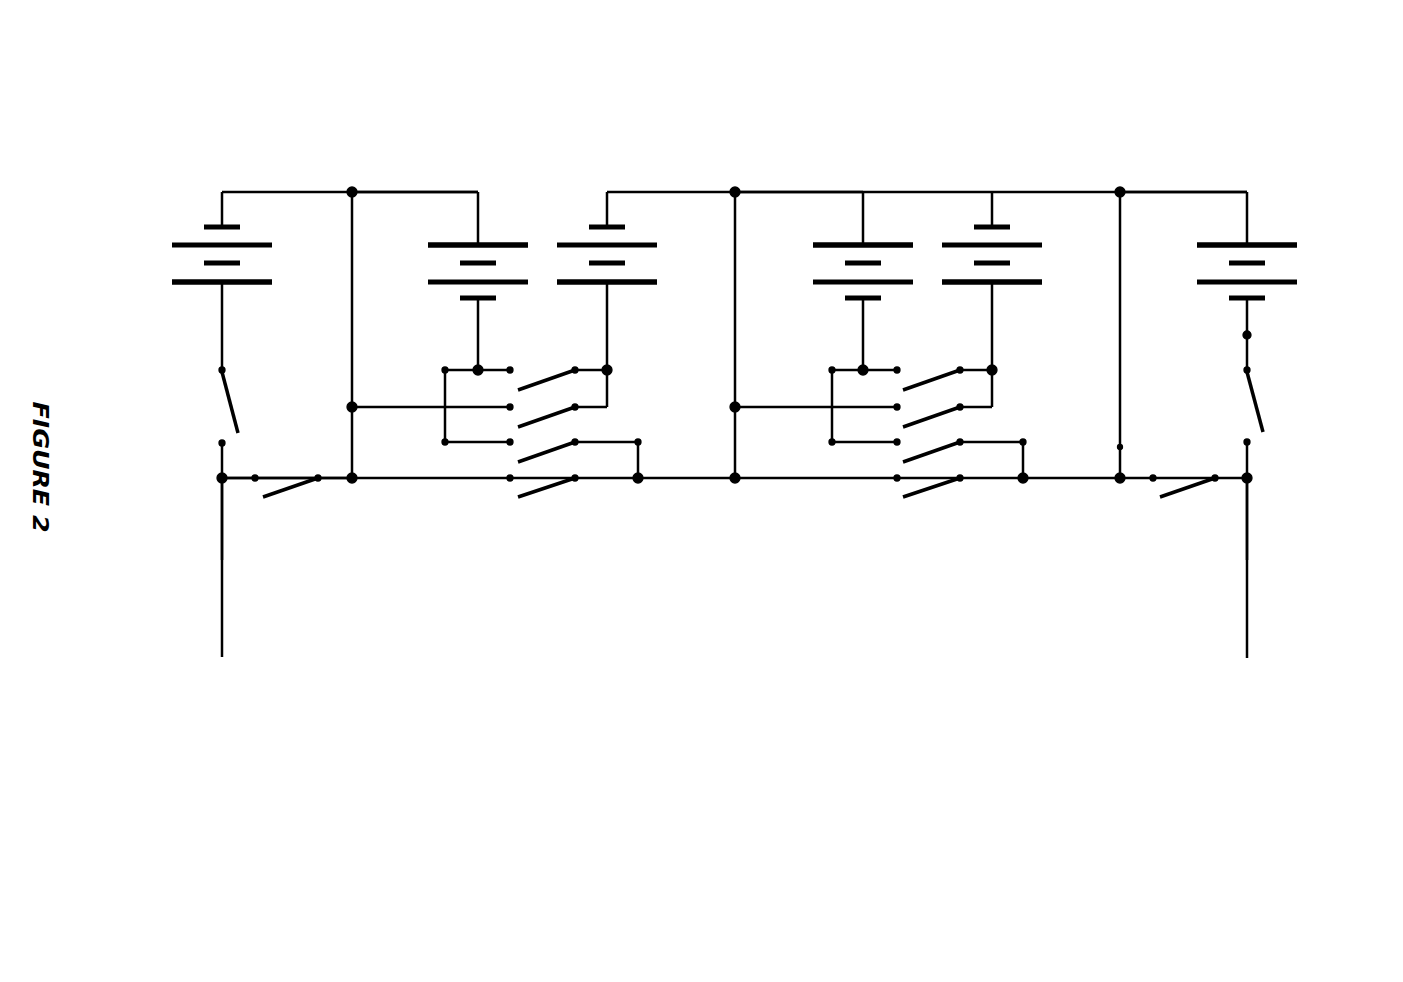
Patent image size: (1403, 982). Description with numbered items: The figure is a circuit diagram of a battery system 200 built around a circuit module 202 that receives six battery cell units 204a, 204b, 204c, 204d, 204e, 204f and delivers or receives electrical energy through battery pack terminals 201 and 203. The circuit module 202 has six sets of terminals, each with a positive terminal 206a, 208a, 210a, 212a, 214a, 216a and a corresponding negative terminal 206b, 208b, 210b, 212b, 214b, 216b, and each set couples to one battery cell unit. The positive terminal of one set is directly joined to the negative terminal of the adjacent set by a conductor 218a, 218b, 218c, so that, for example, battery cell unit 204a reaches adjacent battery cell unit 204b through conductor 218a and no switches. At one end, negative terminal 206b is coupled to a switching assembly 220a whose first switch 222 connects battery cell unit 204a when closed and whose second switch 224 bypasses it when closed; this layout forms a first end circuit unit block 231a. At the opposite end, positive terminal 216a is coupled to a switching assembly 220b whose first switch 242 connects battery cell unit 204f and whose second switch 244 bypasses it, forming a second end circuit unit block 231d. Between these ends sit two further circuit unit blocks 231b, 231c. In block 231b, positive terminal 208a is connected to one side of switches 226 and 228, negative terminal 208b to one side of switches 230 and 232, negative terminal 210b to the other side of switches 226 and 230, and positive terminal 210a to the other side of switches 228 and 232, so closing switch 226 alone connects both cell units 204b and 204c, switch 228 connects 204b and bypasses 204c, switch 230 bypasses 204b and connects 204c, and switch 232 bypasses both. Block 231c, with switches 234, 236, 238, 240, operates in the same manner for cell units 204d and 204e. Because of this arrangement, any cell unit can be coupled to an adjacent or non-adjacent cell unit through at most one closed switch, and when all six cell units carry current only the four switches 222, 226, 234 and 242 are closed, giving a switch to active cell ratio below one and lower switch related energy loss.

The battery system 200 is at (1357, 790).
The battery pack terminal 201 is at (1248, 615).
The circuit module 202 is at (1342, 713).
The battery pack terminal 203 is at (220, 637).
The battery cell unit 204a is at (1265, 266).
The battery cell unit 204b is at (1014, 279).
The battery cell unit 204c is at (832, 253).
The battery cell unit 204d is at (621, 271).
The battery cell unit 204e is at (455, 253).
The battery cell unit 204f is at (233, 261).
The positive terminal 206a is at (1250, 243).
The negative terminal 206b is at (1250, 300).
The positive terminal 208a is at (995, 285).
The negative terminal 208b is at (990, 225).
The positive terminal 210a is at (865, 243).
The negative terminal 210b is at (860, 300).
The positive terminal 212a is at (605, 284).
The negative terminal 212b is at (603, 225).
The positive terminal 214a is at (480, 243).
The negative terminal 214b is at (475, 300).
The positive terminal 216a is at (220, 284).
The negative terminal 216b is at (220, 225).
The conductor 218a is at (1173, 192).
The conductor 218b is at (775, 192).
The conductor 218c is at (390, 192).
The switching assembly 220a is at (1283, 512).
The switching assembly 220b is at (198, 500).
The first switch 222 is at (1258, 408).
The second switch 224 is at (1177, 493).
The switch 226 is at (927, 382).
The switch 228 is at (930, 415).
The switch 230 is at (930, 452).
The first end circuit unit block 231a is at (1175, 620).
The circuit unit block 231b is at (903, 613).
The circuit unit block 231c is at (532, 607).
The second end circuit unit block 231d is at (287, 607).
The switch 232 is at (922, 492).
The switch 234 is at (542, 382).
The switch 236 is at (545, 415).
The switch 238 is at (545, 452).
The switch 240 is at (543, 492).
The first switch 242 is at (232, 400).
The second switch 244 is at (290, 492).